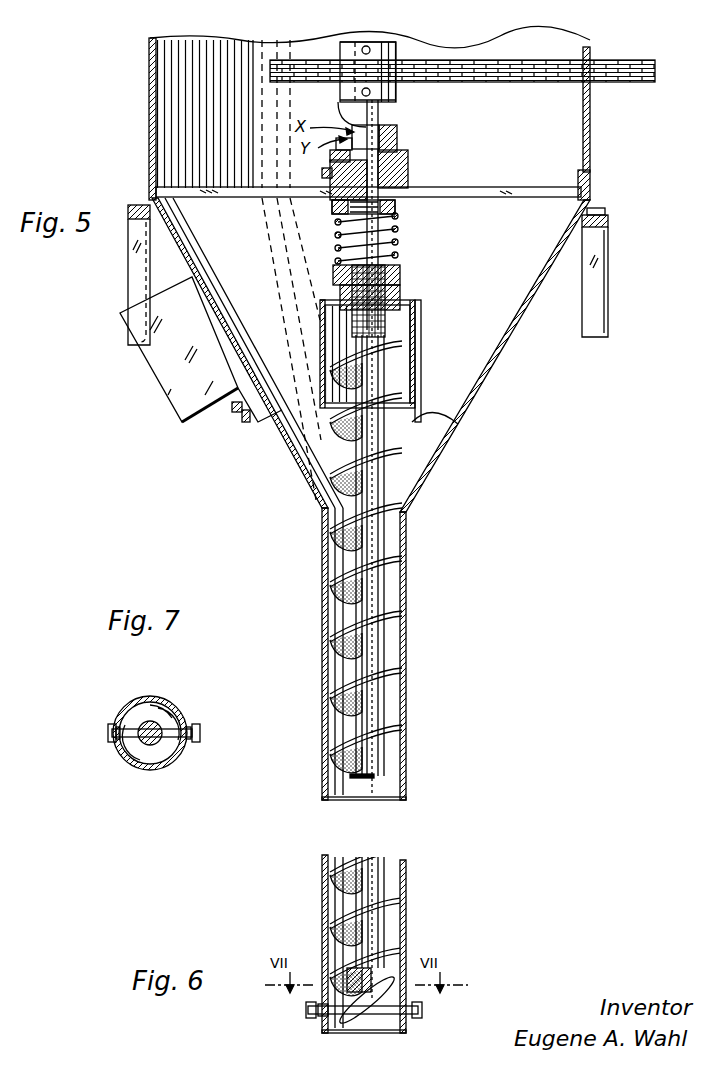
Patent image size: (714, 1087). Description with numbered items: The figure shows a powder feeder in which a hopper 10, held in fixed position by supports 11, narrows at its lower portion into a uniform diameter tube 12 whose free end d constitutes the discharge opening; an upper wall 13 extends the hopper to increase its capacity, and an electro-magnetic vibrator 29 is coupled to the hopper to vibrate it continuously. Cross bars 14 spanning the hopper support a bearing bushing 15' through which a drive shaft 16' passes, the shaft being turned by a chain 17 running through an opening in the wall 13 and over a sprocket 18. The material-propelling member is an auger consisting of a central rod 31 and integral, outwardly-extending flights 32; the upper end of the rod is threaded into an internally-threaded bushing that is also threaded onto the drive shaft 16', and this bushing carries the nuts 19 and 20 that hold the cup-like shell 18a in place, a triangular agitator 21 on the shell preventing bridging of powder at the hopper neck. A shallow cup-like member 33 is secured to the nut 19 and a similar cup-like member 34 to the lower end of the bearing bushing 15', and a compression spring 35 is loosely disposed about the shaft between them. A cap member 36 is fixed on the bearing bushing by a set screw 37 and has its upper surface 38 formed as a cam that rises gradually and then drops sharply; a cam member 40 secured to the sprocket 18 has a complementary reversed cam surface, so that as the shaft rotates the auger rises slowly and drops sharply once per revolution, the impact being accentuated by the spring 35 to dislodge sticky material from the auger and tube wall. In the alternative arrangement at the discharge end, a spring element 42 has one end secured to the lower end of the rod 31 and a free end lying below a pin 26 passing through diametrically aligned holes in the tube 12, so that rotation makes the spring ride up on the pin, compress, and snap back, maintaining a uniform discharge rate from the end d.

In FIG. 5, the hopper 10 is at (482, 388).
In FIG. 5, the supports 11 is at (137, 277).
In FIG. 5, the tube 12 is at (404, 628).
In FIG. 7, the tube 12 is at (178, 712).
In FIG. 6, the tube 12 is at (405, 928).
In FIG. 5, the wall 13 is at (150, 96).
In FIG. 5, the cross bars 14 is at (500, 193).
In FIG. 5, the bearing bushing 15' is at (294, 270).
In FIG. 5, the drive shaft 16' is at (296, 240).
In FIG. 5, the chain 17 is at (623, 84).
In FIG. 5, the sprocket 18 is at (275, 46).
In FIG. 5, the cup-like shell 18a is at (421, 326).
In FIG. 5, the nut 19 is at (400, 278).
In FIG. 5, the nut 20 is at (415, 298).
In FIG. 5, the triangular agitator 21 is at (458, 422).
In FIG. 7, the pin 26 is at (210, 733).
In FIG. 6, the pin 26 is at (305, 1010).
In FIG. 5, the electro-magnetic vibrator 29 is at (178, 392).
In FIG. 5, the auger rod 31 is at (363, 595).
In FIG. 7, the auger rod 31 is at (165, 745).
In FIG. 6, the auger rod 31 is at (365, 878).
In FIG. 5, the flights 32 is at (357, 322).
In FIG. 6, the flights 32 is at (385, 893).
In FIG. 5, the shallow cup-like member 33 is at (400, 268).
In FIG. 5, the cup-like member 34 is at (398, 226).
In FIG. 5, the compression spring 35 is at (343, 253).
In FIG. 5, the cap member 36 is at (410, 165).
In FIG. 5, the set screw 37 is at (327, 173).
In FIG. 5, the cam surface 38 is at (398, 129).
In FIG. 5, the cam member 40 is at (340, 102).
In FIG. 7, the spring element 42 is at (170, 722).
In FIG. 6, the spring element 42 is at (393, 995).
In FIG. 5, the free end d is at (353, 802).
In FIG. 6, the free end d is at (355, 1036).